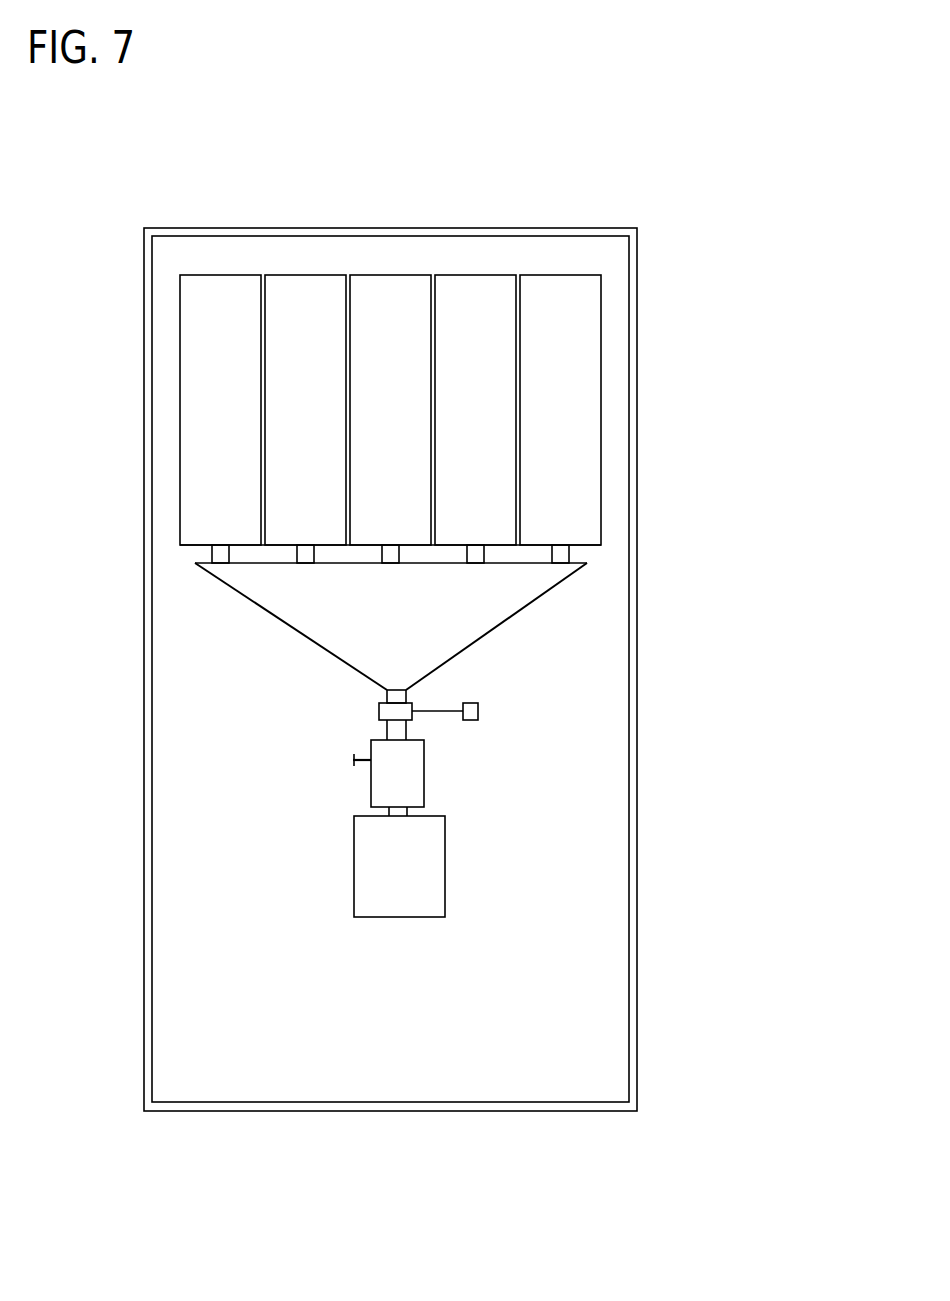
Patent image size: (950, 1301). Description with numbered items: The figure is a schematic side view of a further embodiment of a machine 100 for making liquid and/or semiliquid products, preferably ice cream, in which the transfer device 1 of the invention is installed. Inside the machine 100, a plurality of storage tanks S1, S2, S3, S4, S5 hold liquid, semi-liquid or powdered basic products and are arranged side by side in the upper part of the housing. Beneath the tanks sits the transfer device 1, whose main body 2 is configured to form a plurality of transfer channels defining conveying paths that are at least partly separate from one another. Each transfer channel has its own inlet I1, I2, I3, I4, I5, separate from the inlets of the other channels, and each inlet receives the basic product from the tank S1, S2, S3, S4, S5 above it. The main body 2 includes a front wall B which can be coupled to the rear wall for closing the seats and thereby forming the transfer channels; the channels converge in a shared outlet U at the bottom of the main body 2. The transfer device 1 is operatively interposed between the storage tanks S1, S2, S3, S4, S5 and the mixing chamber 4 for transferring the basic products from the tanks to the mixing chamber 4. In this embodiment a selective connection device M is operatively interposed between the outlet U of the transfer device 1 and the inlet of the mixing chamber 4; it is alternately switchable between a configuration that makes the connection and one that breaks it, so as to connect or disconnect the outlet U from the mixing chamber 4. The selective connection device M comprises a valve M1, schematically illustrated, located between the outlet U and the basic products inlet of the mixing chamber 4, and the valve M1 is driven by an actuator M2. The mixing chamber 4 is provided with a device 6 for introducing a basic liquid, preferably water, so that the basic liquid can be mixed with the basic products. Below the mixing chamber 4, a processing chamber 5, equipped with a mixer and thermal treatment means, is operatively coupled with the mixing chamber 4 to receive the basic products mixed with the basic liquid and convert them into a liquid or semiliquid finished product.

The machine for making liquid and/or semiliquid products 100 is at (690, 220).
The storage tank S1 is at (234, 369).
The storage tank S2 is at (319, 369).
The storage tank S3 is at (404, 369).
The storage tank S4 is at (489, 369).
The storage tank S5 is at (574, 369).
The inlet I1 is at (210, 560).
The inlet I2 is at (295, 560).
The inlet I3 is at (400, 560).
The inlet I4 is at (485, 560).
The inlet I5 is at (570, 560).
The front wall B is at (396, 633).
The transfer device 1 is at (528, 610).
The main body 2 is at (275, 617).
The selective connection device M is at (419, 744).
The valve M1 is at (378, 711).
The actuator M2 is at (474, 720).
The outlet U is at (408, 732).
The mixing chamber 4 is at (404, 788).
The processing chamber 5 is at (406, 878).
The device for introducing a basic liquid 6 is at (360, 763).